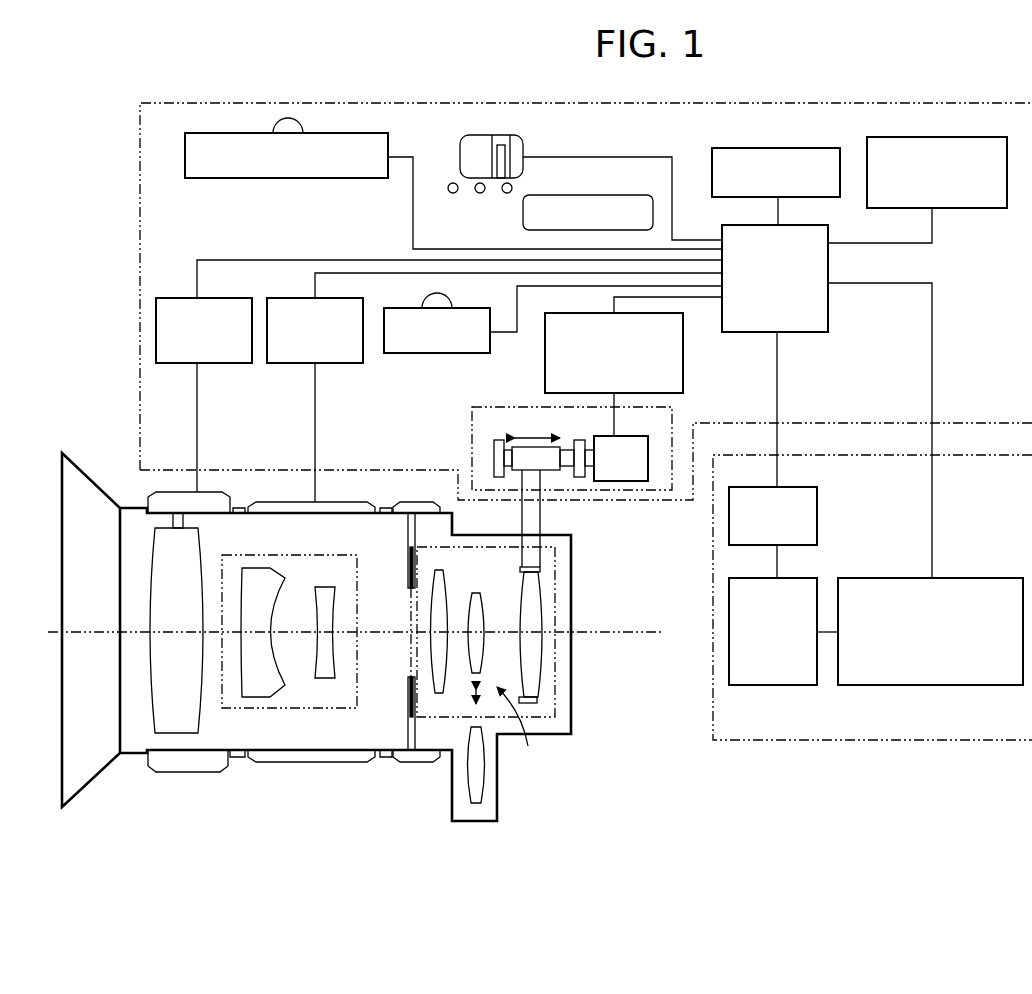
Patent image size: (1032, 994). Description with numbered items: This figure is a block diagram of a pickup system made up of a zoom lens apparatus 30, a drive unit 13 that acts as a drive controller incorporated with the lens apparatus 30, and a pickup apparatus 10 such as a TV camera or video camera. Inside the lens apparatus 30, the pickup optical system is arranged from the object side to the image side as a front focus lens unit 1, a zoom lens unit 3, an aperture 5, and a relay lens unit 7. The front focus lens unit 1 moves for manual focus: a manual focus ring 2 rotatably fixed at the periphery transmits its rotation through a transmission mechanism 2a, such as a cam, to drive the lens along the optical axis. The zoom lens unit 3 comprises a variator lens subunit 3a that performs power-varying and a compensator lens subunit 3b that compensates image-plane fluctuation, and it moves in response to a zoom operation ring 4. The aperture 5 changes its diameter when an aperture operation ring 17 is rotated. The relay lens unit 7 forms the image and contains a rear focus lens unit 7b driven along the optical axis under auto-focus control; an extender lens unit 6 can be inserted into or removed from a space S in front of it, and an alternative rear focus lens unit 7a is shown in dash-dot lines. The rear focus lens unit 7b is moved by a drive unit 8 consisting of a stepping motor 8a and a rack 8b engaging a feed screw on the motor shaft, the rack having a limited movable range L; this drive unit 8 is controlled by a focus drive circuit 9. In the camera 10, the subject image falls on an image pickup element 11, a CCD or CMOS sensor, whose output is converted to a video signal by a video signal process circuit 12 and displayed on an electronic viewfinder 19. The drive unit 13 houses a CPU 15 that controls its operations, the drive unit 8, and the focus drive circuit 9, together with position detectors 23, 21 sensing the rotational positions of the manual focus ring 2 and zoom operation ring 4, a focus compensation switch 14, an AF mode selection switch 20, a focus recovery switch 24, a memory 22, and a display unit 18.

The front focus lens unit 1 is at (160, 717).
The manual focus ring 2 is at (150, 498).
The transmission mechanism 2a is at (173, 520).
The zoom lens unit 3 is at (289, 684).
The variator lens subunit 3a is at (258, 690).
The compensator lens subunit 3b is at (325, 678).
The zoom operation ring 4 is at (318, 512).
The aperture 5 is at (410, 727).
The extender lens unit 6 is at (472, 800).
The relay lens unit 7 is at (510, 641).
The alternative rear focus lens unit 7a is at (437, 690).
The rear focus lens unit 7b is at (538, 680).
The drive unit 8 is at (584, 477).
The stepping motor 8a is at (640, 478).
The rack 8b is at (540, 517).
The focus drive circuit 9 is at (683, 366).
The pickup apparatus 10 is at (870, 740).
The image pickup element 11 is at (777, 685).
The video signal process circuit 12 is at (927, 685).
The drive unit 13 is at (140, 175).
The focus compensation switch 14 is at (428, 353).
The CPU 15 is at (828, 316).
The aperture operation ring 17 is at (412, 500).
The display unit 18 is at (937, 137).
The electronic viewfinder 19 is at (817, 516).
The AF mode selection switch 20 is at (497, 135).
The position detector 21 is at (287, 363).
The memory 22 is at (770, 148).
The position detector 23 is at (156, 332).
The focus recovery switch 24 is at (240, 133).
The zoom lens apparatus 30 is at (183, 820).